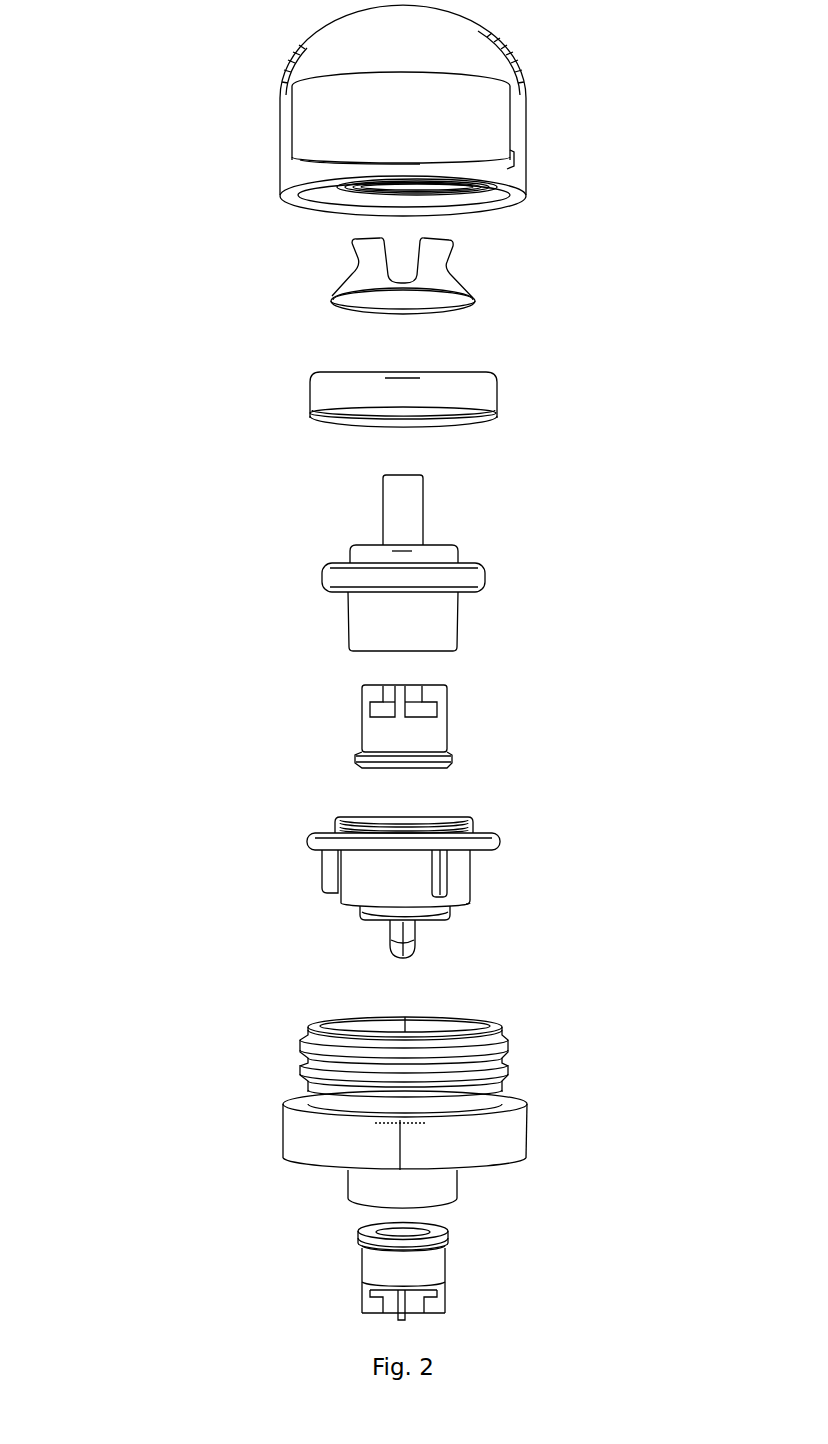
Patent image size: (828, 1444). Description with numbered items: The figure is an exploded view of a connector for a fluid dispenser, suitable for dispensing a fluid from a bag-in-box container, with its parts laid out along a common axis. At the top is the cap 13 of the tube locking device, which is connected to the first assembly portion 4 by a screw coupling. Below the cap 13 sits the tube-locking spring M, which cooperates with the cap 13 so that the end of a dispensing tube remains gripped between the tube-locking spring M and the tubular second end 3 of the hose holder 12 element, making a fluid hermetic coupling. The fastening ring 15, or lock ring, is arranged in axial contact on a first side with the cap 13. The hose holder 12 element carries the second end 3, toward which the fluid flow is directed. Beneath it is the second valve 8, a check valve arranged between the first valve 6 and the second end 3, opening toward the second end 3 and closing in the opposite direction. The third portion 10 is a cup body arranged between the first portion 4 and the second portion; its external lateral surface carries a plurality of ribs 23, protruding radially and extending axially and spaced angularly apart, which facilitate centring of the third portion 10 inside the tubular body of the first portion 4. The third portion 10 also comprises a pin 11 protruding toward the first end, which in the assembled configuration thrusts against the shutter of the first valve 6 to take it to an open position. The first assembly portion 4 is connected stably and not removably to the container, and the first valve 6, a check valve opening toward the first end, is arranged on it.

The cap 13 is at (307, 112).
The tube-locking spring M is at (447, 278).
The fastening ring 15 is at (487, 392).
The second end 3 is at (388, 512).
The hose holder element 12 is at (327, 578).
The second valve 8 is at (427, 731).
The third portion 10 is at (388, 889).
The ribs 23 is at (325, 868).
The pin 11 is at (403, 930).
The first assembly portion 4 is at (288, 1128).
The first valve 6 is at (372, 1265).